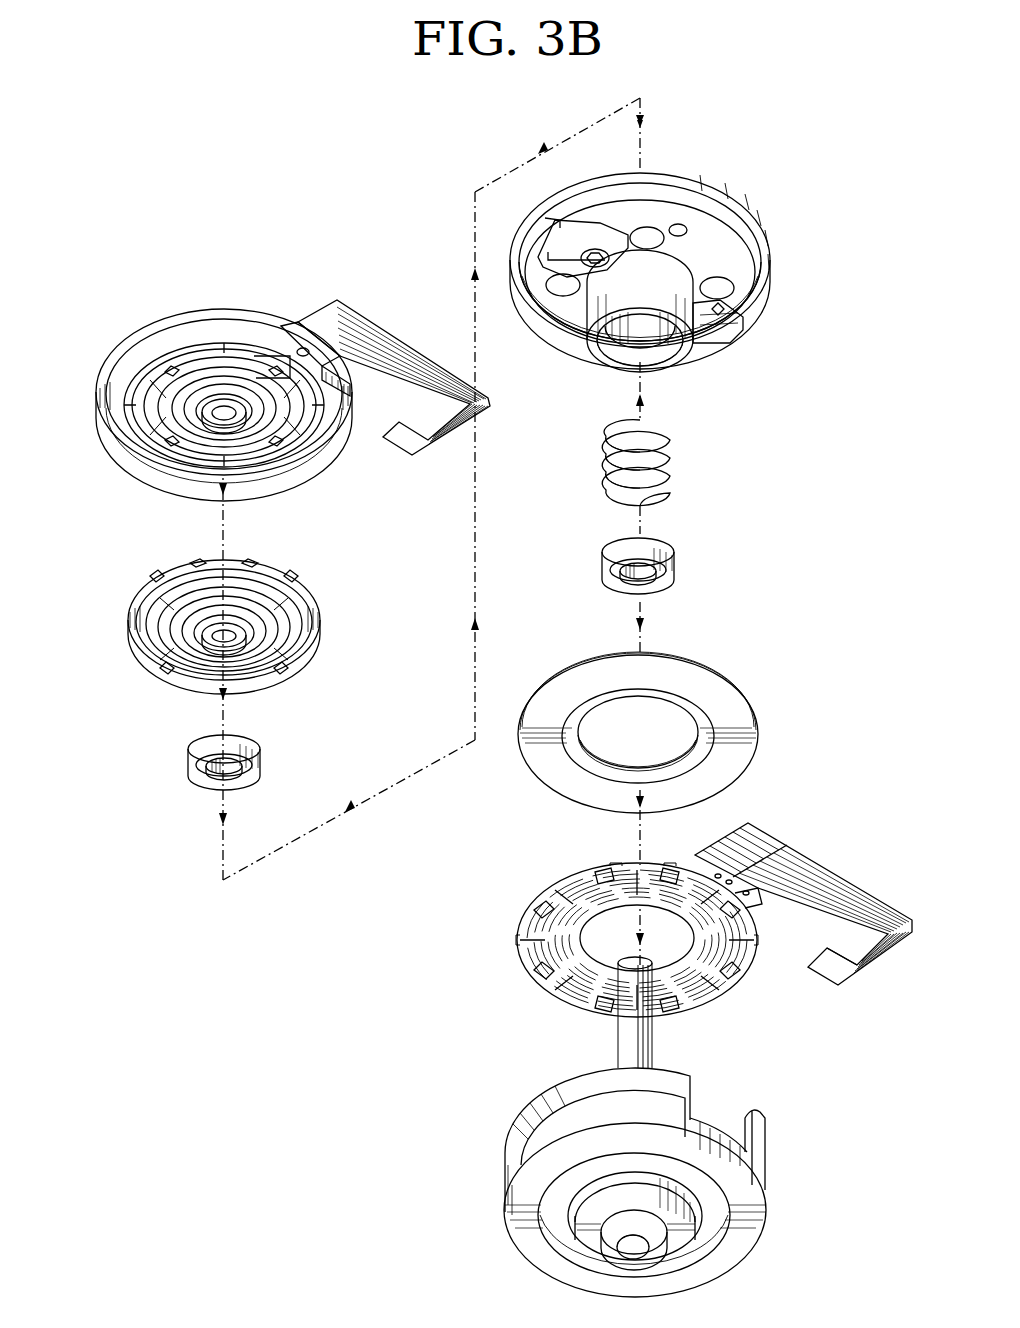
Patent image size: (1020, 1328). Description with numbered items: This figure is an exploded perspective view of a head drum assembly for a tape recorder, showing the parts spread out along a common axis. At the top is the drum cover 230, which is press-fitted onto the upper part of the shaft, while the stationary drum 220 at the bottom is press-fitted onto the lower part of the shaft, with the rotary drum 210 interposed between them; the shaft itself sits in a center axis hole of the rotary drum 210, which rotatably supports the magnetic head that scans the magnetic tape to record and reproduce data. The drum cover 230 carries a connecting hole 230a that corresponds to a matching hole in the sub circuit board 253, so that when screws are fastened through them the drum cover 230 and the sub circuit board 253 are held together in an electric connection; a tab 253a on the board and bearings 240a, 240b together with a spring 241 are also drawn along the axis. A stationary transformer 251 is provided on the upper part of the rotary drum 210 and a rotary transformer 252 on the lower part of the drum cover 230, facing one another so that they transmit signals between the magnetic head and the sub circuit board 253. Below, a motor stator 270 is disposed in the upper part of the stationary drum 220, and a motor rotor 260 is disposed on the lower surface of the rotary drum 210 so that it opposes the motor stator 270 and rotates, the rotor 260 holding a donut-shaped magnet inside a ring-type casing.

The rotary drum 210 is at (770, 228).
The stationary drum 220 is at (770, 1175).
The drum cover 230 is at (266, 381).
The connecting hole 230a is at (306, 348).
The sub circuit board 253 is at (130, 448).
The rotor tab 253a is at (294, 336).
The stationary transformer 251 is at (254, 618).
The rotary transformer 252 is at (318, 641).
The first bearing 240a is at (192, 750).
The second bearing 240b is at (674, 563).
The spring 241 is at (672, 468).
The motor rotor 260 is at (745, 752).
The motor stator 270 is at (722, 986).